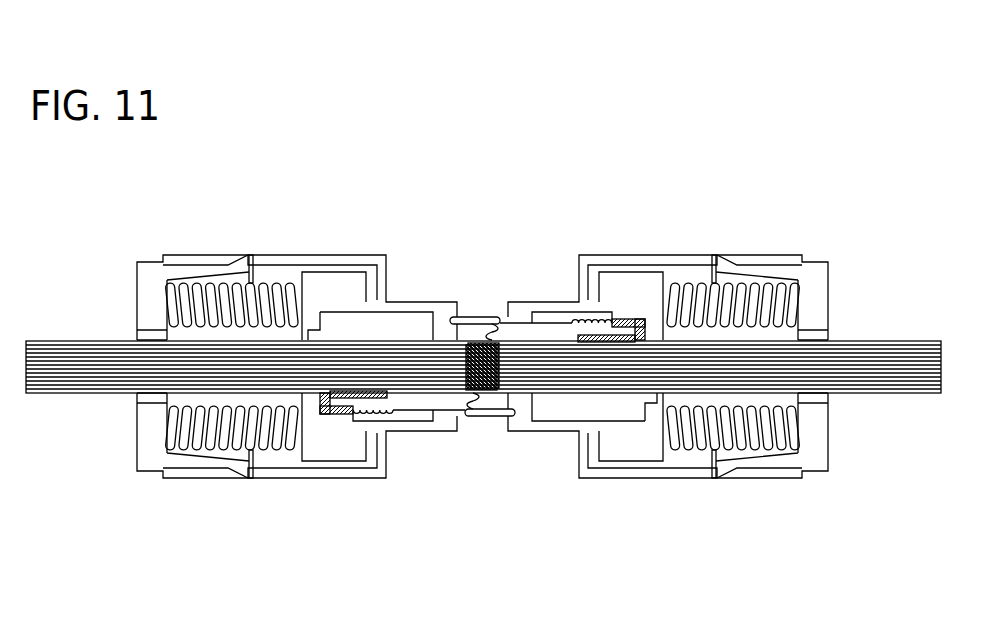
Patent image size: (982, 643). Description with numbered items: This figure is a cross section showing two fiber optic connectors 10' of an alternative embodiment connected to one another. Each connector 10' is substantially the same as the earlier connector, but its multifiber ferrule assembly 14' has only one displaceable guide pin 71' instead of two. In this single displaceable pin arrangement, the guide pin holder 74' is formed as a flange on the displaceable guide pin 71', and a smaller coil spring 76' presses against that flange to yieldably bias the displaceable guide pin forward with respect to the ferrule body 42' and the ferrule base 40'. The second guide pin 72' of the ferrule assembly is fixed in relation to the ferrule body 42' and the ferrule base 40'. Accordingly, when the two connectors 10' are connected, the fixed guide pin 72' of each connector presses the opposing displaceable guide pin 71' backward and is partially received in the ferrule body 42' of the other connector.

The fiber optic connector 10' is at (483, 380).
The multifiber ferrule assembly 14' is at (482, 360).
The ferrule base 40' is at (482, 362).
The ferrule body 42' is at (487, 357).
The displaceable guide pin 71' is at (482, 386).
The second guide pin 72' is at (486, 330).
The guide pin holder 74' is at (482, 358).
The coil spring 76' is at (485, 359).